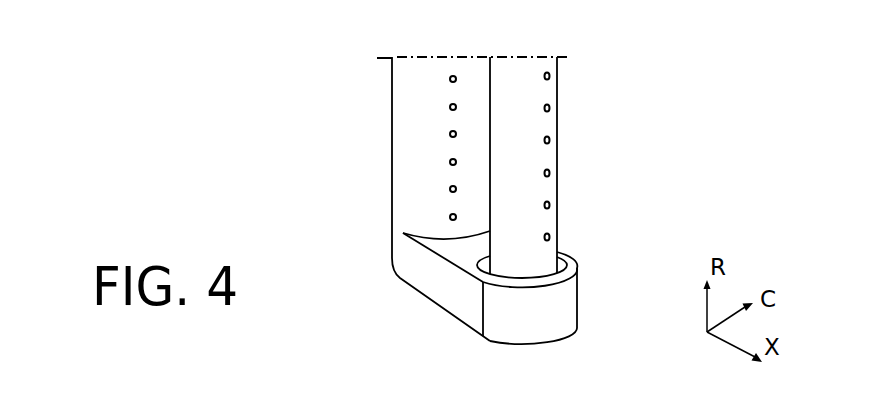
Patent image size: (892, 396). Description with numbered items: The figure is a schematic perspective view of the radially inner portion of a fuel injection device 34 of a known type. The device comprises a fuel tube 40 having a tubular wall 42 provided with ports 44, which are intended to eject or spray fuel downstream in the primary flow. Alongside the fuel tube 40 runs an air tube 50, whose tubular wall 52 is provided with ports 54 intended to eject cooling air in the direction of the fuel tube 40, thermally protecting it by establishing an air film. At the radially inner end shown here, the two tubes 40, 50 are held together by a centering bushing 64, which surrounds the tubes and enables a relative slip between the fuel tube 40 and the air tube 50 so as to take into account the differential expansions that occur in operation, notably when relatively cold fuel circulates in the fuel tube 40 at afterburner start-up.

The fuel injection device 34 is at (373, 141).
The fuel tube 40 is at (596, 165).
The tubular wall 42 is at (550, 219).
The ports 44 is at (547, 107).
The air tube 50 is at (366, 193).
The tubular wall 52 is at (410, 194).
The ports 54 is at (452, 106).
The centering bushing 64 is at (558, 308).